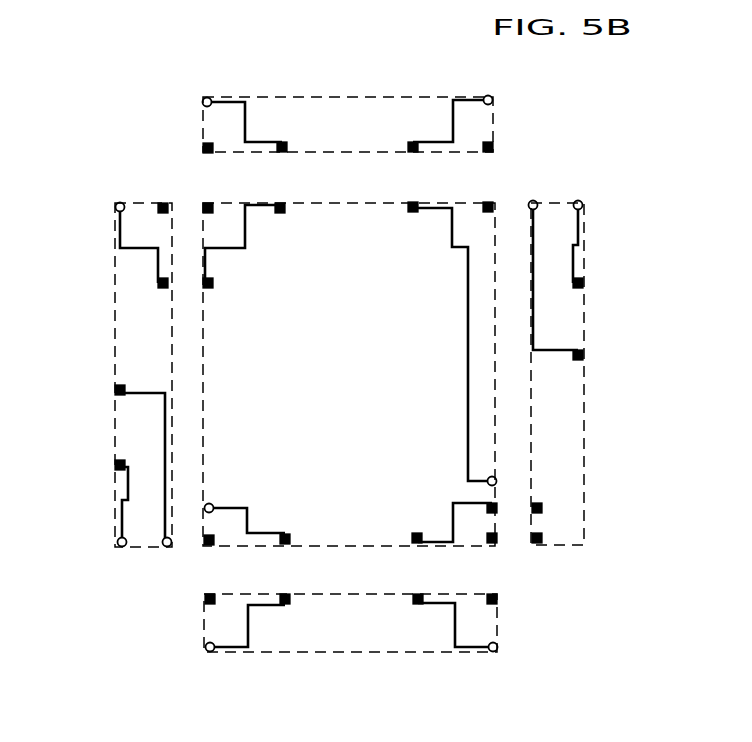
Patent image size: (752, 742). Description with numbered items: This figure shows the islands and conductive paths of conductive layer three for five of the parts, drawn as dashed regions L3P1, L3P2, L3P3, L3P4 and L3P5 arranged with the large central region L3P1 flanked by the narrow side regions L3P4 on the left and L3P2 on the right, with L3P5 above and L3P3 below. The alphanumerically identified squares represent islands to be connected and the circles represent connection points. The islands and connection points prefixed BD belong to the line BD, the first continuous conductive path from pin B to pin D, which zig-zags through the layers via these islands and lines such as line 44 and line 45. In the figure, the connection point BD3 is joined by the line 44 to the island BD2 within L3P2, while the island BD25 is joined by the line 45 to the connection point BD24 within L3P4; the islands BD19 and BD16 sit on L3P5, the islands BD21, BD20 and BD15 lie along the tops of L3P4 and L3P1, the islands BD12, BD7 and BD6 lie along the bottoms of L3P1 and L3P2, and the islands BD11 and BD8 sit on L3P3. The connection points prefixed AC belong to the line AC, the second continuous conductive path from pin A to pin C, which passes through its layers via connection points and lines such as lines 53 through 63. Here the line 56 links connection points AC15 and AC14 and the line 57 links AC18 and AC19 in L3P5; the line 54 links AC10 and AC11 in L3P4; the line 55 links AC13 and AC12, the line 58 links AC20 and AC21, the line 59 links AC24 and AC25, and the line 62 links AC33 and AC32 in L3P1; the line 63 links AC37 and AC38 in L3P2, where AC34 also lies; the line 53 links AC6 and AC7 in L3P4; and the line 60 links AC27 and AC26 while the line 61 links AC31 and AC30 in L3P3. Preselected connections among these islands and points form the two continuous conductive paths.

The line 44 is at (535, 322).
The line 45 is at (165, 414).
The line 53 is at (127, 487).
The line 54 is at (158, 262).
The line 55 is at (247, 228).
The line 56 is at (247, 120).
The line 57 is at (455, 122).
The line 58 is at (467, 330).
The line 59 is at (248, 513).
The line 60 is at (250, 628).
The line 61 is at (455, 622).
The line 62 is at (453, 515).
The line 63 is at (574, 258).
The connection point AC10 is at (115, 207).
The connection point AC11 is at (160, 283).
The connection point AC12 is at (212, 285).
The connection point AC13 is at (282, 213).
The connection point AC14 is at (285, 143).
The connection point AC15 is at (210, 98).
The connection point AC18 is at (487, 95).
The connection point AC19 is at (411, 143).
The connection point AC20 is at (413, 212).
The connection point AC21 is at (488, 478).
The connection point AC24 is at (212, 503).
The connection point AC25 is at (286, 533).
The connection point AC26 is at (286, 606).
The connection point AC27 is at (205, 648).
The connection point AC30 is at (498, 648).
The connection point AC31 is at (418, 606).
The connection point AC32 is at (415, 545).
The connection point AC33 is at (488, 505).
The connection point AC34 is at (542, 508).
The connection point AC37 is at (583, 205).
The connection point AC38 is at (583, 283).
The connection point AC6 is at (118, 462).
The connection point AC7 is at (118, 542).
The island BD11 is at (205, 600).
The island BD12 is at (212, 546).
The island BD15 is at (487, 203).
The island BD16 is at (495, 147).
The island BD19 is at (204, 146).
The island BD2 is at (583, 355).
The island BD20 is at (210, 203).
The island BD21 is at (162, 203).
The connection point BD24 is at (166, 548).
The island BD25 is at (118, 390).
The connection point BD3 is at (535, 200).
The island BD6 is at (540, 546).
The island BD7 is at (492, 546).
The island BD8 is at (498, 600).
The conductive layer 3 pattern of part P1 L3P1 is at (375, 198).
The conductive layer 3 pattern of part P2 L3P2 is at (590, 428).
The conductive layer 3 pattern of part P3 L3P3 is at (400, 658).
The conductive layer 3 pattern of part P4 L3P4 is at (110, 331).
The conductive layer 3 pattern of part P5 L3P5 is at (378, 90).